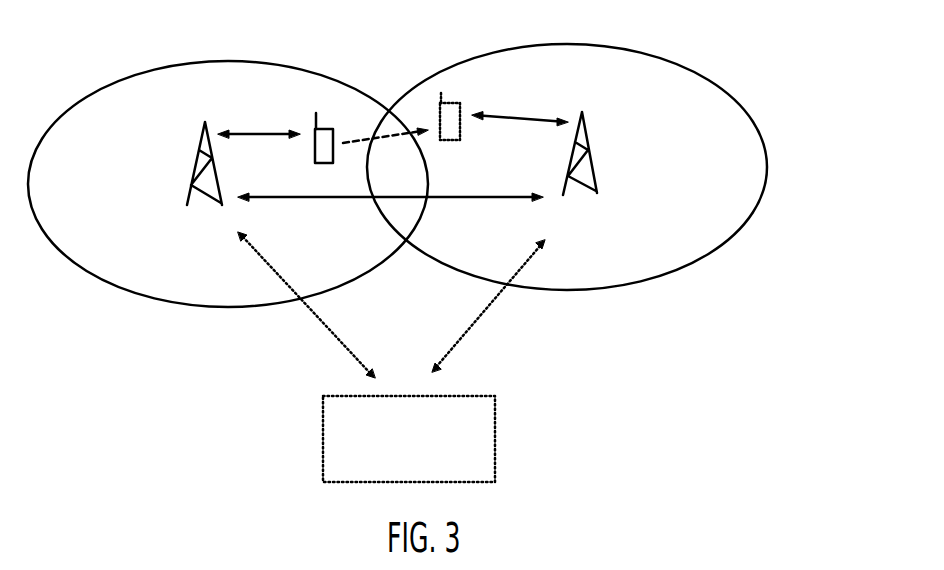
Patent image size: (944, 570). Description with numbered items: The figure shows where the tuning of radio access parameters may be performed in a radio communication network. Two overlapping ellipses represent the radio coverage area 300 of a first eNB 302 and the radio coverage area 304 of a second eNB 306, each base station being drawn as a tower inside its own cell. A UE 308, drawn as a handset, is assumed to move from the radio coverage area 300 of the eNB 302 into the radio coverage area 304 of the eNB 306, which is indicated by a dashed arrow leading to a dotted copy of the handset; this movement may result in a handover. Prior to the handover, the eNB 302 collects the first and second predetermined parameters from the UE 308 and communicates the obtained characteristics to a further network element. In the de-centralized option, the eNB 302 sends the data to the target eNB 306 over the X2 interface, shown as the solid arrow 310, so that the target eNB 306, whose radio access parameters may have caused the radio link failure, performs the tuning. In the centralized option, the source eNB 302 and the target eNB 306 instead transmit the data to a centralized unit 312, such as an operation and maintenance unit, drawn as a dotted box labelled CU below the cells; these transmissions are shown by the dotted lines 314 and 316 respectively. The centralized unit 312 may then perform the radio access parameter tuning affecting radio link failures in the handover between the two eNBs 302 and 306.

The radio coverage area 300 is at (158, 65).
The eNB 302 is at (200, 137).
The radio coverage area 304 is at (622, 45).
The eNB 306 is at (597, 196).
The UE 308 is at (332, 128).
The solid arrow 310 is at (483, 199).
The centralized unit 312 is at (409, 439).
The dotted line 314 is at (328, 328).
The dotted line 316 is at (473, 327).